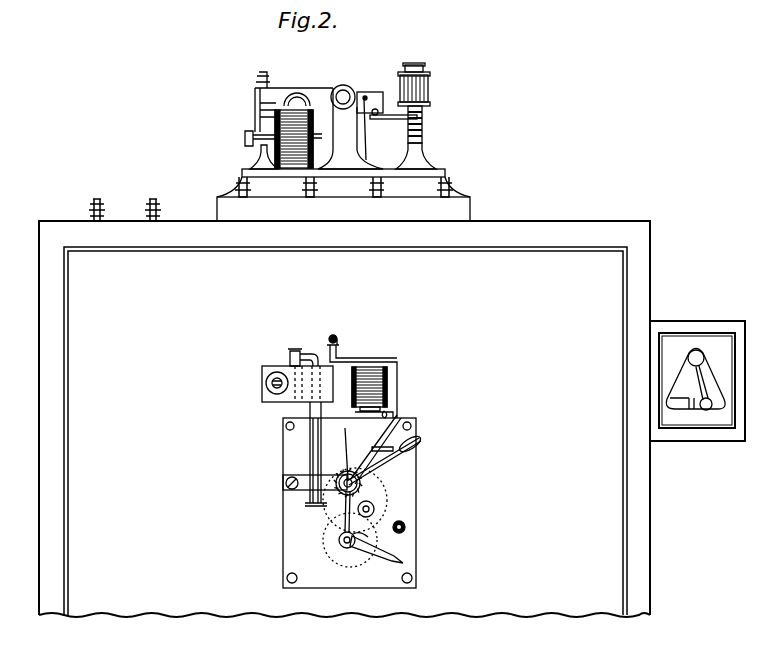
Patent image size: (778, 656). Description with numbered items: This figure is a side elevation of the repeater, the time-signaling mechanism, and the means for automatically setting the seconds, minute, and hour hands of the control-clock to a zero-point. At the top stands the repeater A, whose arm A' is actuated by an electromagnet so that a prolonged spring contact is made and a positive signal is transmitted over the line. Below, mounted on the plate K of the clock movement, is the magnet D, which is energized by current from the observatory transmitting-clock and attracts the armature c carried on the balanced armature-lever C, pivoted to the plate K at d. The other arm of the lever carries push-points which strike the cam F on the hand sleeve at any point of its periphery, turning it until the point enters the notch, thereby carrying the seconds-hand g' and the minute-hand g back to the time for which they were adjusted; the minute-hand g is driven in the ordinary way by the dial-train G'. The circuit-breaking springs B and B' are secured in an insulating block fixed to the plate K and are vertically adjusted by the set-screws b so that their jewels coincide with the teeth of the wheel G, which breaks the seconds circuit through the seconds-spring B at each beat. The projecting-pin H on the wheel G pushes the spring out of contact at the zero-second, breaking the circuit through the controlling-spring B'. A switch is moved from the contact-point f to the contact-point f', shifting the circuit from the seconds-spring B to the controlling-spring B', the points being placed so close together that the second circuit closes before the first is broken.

The repeater A is at (350, 128).
The repeater arm A' is at (335, 88).
The cylinder casing a is at (259, 383).
The set-screws b is at (294, 356).
The valve rod b' is at (362, 376).
The magnet D is at (362, 387).
The armature c is at (374, 410).
The pivot d is at (409, 416).
The seconds-spring B is at (310, 435).
The controlling-spring B' is at (307, 454).
The armature-lever C is at (358, 454).
The minute-hand g is at (389, 459).
The wheel G is at (355, 491).
The cam F is at (315, 483).
The dial-train wheel G' is at (383, 514).
The seconds-hand g' is at (350, 529).
The plate K is at (359, 503).
The projecting-pin H is at (695, 379).
The contact-point f is at (682, 412).
The contact-point f' is at (707, 412).